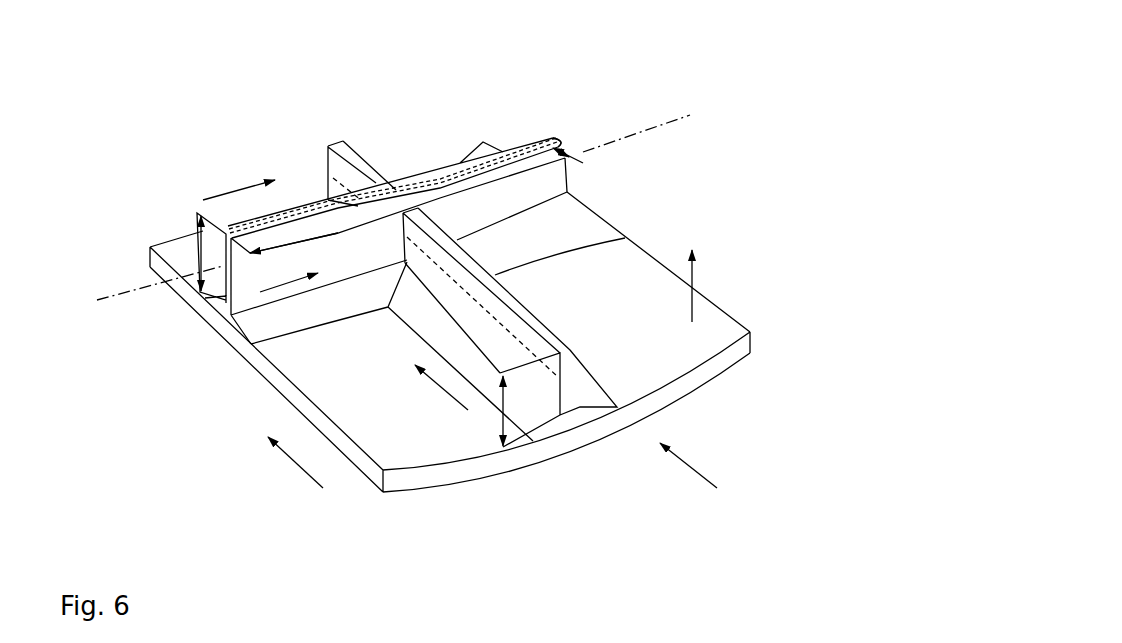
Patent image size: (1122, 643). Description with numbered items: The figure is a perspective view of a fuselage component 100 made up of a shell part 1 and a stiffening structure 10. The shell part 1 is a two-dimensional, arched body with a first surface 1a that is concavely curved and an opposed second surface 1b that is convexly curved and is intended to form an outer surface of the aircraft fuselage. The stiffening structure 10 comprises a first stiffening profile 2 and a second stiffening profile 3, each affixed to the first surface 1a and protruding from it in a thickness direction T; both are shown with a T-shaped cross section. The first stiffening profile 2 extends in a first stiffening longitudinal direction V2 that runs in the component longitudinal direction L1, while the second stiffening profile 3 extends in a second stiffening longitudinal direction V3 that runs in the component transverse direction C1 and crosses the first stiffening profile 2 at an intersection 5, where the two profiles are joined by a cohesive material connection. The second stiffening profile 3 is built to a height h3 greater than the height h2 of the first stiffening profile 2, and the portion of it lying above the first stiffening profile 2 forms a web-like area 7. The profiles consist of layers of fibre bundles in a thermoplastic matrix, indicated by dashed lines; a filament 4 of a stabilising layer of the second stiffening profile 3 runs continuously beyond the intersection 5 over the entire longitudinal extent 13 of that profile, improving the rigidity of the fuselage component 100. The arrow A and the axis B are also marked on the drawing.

The shell part 1 is at (670, 392).
The first surface 1a is at (632, 262).
The second surface 1b is at (726, 377).
The first stiffening profile 2 is at (580, 410).
The second stiffening profile 3 is at (218, 305).
The filament 4 is at (362, 182).
The intersection 5 is at (410, 161).
The web-like area 7 is at (580, 134).
The stiffening structure 10 is at (613, 80).
The longitudinal extent 13 is at (541, 137).
The fuselage component 100 is at (786, 60).
The viewing direction A is at (687, 465).
The axis B is at (394, 210).
The thickness direction T is at (692, 273).
The component transverse direction C1 is at (240, 188).
The component longitudinal direction L1 is at (303, 477).
The first stiffening longitudinal direction V2 is at (438, 390).
The second stiffening longitudinal direction V3 is at (283, 285).
The height of the first stiffening profile h2 is at (505, 399).
The height of the second stiffening profile h3 is at (198, 253).